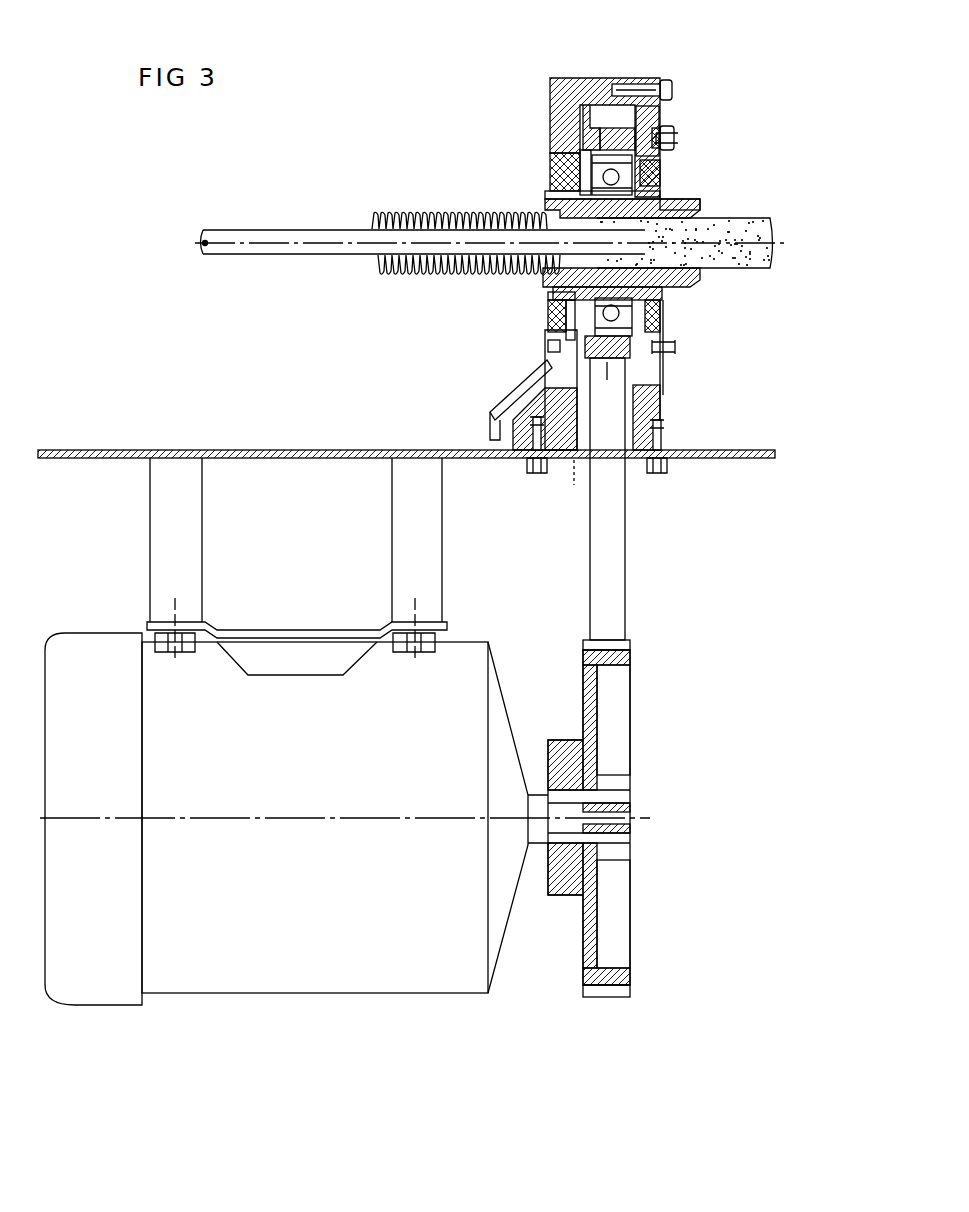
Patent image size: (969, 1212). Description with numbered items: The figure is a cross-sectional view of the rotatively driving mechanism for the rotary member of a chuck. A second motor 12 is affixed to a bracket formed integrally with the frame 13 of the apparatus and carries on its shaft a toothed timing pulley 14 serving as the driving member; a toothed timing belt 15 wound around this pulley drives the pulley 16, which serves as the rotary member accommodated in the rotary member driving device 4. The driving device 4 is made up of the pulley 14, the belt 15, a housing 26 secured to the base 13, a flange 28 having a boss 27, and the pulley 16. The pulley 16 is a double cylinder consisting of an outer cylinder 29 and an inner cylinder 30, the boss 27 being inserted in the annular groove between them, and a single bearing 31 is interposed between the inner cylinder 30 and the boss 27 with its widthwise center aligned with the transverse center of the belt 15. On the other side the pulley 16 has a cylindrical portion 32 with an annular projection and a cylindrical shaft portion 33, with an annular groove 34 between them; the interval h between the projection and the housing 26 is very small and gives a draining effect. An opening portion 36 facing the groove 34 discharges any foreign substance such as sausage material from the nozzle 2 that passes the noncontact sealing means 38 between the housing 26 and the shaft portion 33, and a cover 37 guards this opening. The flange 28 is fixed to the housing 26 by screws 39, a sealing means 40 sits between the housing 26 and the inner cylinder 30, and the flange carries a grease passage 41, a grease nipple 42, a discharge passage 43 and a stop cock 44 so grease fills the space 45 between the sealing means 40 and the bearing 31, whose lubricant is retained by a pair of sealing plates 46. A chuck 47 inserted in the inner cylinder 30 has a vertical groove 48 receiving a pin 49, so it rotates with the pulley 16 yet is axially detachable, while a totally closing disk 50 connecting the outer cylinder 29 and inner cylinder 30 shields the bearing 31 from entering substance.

The nozzle 2 is at (289, 232).
The coil spring brush C is at (380, 212).
The rotary member driving device 4 is at (613, 76).
The second motor 12 is at (330, 978).
The frame 13 is at (83, 450).
The pulley 14 is at (595, 905).
The belt 15 is at (607, 618).
The pulley 16 is at (667, 120).
The housing 26 is at (545, 400).
The boss 27 is at (607, 360).
The flange 28 is at (665, 108).
The outer cylinder 29 is at (604, 135).
The inner cylinder 30 is at (580, 147).
The bearing 31 is at (665, 300).
The cylindrical portion 32 is at (574, 140).
The cylindrical shaft portion 33 is at (568, 180).
The annular groove 34 is at (553, 316).
The opening portion 36 is at (553, 330).
The cover 37 is at (525, 378).
The sealing means 38 is at (553, 300).
The screws 39 is at (667, 88).
The sealing means 40 is at (700, 285).
The grease passage 41 is at (670, 150).
The grease nipple 42 is at (672, 136).
The discharge passage 43 is at (668, 345).
The stop cock 44 is at (660, 358).
The space 45 is at (665, 320).
The sealing plates 46 is at (660, 385).
The chuck 47 is at (552, 205).
The vertical groove 48 is at (690, 205).
The pin 49 is at (665, 194).
The totally closing disk 50 is at (572, 190).
The interval h is at (575, 490).